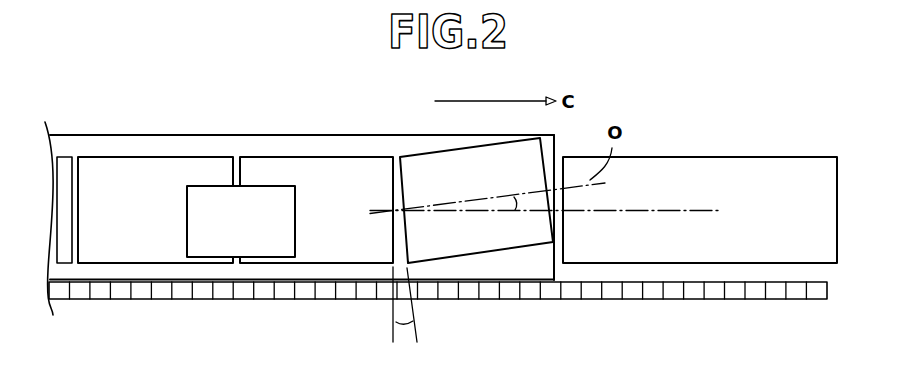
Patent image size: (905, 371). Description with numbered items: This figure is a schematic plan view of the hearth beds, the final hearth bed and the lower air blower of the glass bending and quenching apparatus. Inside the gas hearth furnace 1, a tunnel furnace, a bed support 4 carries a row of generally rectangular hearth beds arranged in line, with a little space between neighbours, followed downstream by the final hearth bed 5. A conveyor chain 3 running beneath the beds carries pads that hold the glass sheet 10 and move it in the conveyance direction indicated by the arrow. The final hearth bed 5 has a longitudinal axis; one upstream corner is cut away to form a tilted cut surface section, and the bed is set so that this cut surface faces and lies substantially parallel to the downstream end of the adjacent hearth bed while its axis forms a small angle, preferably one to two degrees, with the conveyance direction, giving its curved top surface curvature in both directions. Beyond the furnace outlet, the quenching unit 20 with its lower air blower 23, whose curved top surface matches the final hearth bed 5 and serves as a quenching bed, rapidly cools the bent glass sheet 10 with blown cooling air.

The gas hearth furnace 1 is at (275, 116).
The conveyor chain 3 is at (207, 301).
The bed support 4 is at (213, 148).
The final hearth bed 5 is at (478, 238).
The glass sheet 10 is at (268, 238).
The quenching unit 20 is at (721, 273).
The lower air blower 23 is at (775, 172).